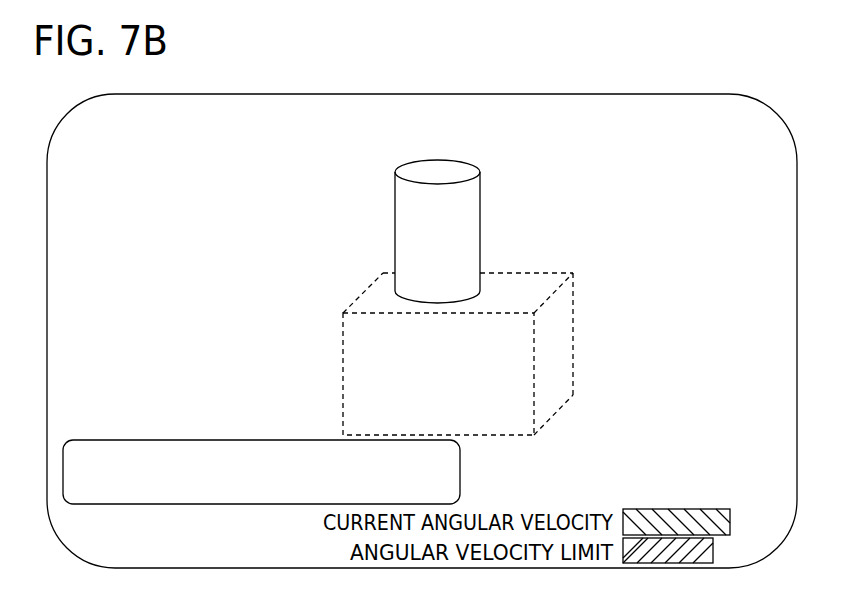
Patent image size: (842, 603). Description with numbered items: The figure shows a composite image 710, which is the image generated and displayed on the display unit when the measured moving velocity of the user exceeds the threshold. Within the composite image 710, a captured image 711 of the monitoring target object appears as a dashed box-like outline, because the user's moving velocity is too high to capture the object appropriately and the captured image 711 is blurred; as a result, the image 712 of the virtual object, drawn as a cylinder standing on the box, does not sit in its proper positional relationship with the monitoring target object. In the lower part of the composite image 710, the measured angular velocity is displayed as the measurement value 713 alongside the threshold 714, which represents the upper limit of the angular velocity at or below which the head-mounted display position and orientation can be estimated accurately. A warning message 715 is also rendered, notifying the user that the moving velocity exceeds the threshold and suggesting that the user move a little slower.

The composite image 710 is at (578, 94).
The captured image of the monitoring target object 711 is at (548, 273).
The virtual object (cylinder) 712 is at (437, 161).
The measurement value 713 is at (670, 509).
The threshold 714 is at (713, 548).
The warning message 715 is at (195, 440).